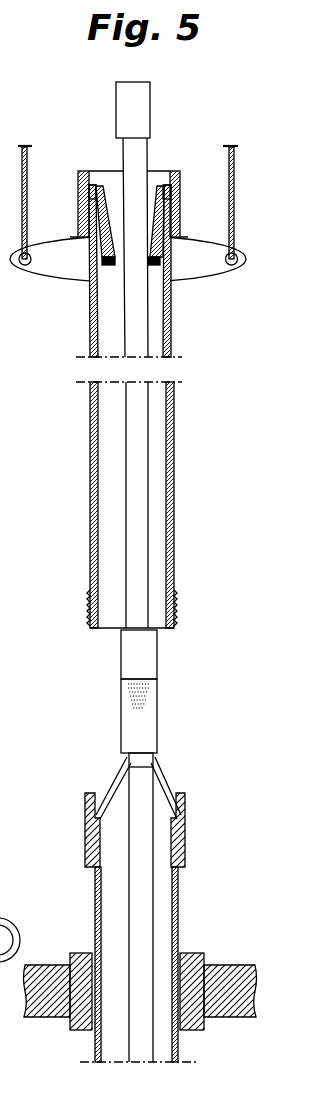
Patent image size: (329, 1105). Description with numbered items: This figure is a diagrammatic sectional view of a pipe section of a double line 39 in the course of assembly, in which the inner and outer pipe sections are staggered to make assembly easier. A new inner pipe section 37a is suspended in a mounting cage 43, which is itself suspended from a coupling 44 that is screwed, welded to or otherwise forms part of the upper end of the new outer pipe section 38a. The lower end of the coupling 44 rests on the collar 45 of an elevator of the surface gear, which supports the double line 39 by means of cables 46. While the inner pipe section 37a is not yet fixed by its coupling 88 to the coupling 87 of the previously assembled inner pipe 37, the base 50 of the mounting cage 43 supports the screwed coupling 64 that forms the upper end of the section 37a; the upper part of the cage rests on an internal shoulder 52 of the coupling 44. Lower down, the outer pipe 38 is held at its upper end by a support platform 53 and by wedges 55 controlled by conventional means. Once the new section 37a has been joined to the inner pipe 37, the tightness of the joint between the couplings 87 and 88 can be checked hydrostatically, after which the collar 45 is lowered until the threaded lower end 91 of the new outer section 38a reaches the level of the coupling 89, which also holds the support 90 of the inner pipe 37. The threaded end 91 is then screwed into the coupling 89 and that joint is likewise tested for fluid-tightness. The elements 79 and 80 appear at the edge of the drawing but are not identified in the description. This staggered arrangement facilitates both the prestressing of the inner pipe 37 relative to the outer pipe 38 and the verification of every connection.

The inner pipe 37 is at (142, 898).
The inner pipe section 37a is at (142, 326).
The outer pipe 38 is at (179, 1047).
The outer pipe section 38a is at (173, 510).
The double line 39 is at (181, 438).
The mounting cage 43 is at (102, 241).
The coupling 44 is at (86, 171).
The collar 45 is at (216, 267).
The cables 46 is at (228, 164).
The base 50 is at (108, 268).
The internal shoulder 52 is at (88, 203).
The support platform 53 is at (48, 1002).
The wedges 55 is at (200, 953).
The screwed coupling 64 is at (138, 100).
The side element 79 is at (7, 740).
The bracket ring 80 is at (11, 915).
The coupling 87 is at (145, 722).
The coupling 88 is at (147, 653).
The coupling 89 is at (85, 813).
The support 90 is at (158, 769).
The threaded lower end 91 is at (176, 606).